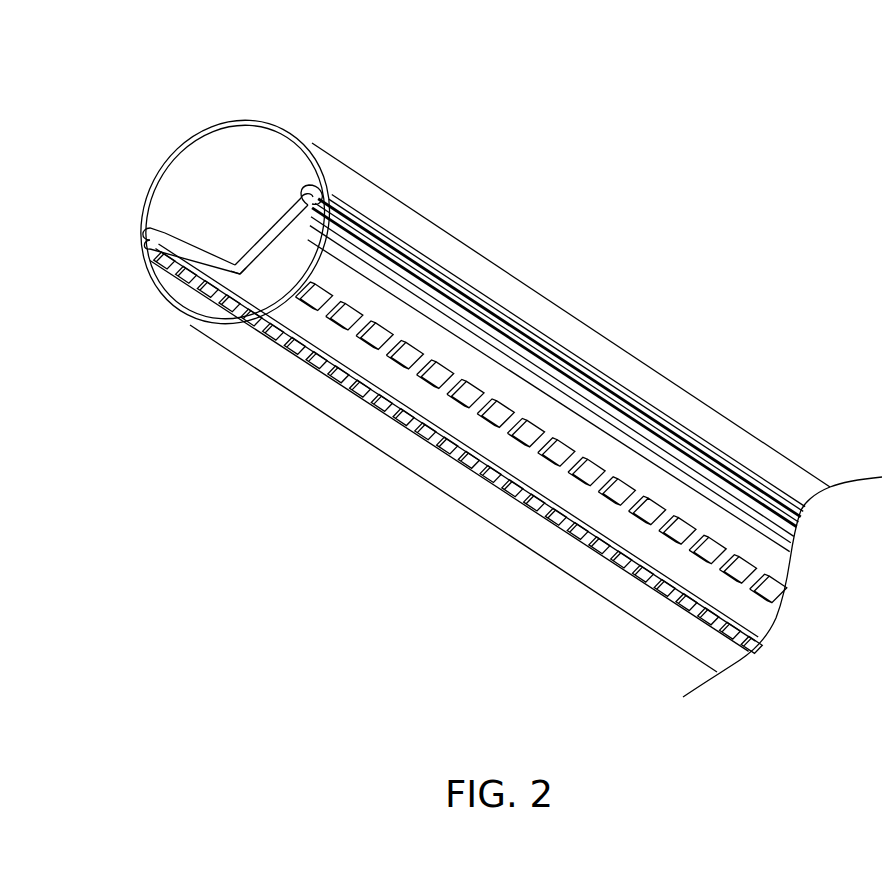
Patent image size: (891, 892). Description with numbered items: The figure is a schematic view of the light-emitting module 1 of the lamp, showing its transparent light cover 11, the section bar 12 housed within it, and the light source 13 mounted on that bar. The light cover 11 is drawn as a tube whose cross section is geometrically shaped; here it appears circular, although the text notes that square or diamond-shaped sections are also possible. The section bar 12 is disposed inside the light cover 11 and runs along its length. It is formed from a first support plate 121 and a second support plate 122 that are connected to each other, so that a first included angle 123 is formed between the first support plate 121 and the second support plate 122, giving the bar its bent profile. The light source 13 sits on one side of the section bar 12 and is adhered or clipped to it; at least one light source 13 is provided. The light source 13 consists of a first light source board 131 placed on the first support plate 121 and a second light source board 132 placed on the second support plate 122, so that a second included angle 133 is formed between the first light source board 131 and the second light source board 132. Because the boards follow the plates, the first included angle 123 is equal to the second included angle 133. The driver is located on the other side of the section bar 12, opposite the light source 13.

The light-emitting module 1 is at (488, 380).
The light cover 11 is at (552, 301).
The section bar 12 is at (464, 310).
The first support plate 121 is at (190, 254).
The second support plate 122 is at (274, 240).
The first included angle 123 is at (236, 268).
The light source 13 is at (441, 449).
The first light source board 131 is at (202, 266).
The second light source board 132 is at (268, 300).
The second included angle 133 is at (223, 262).